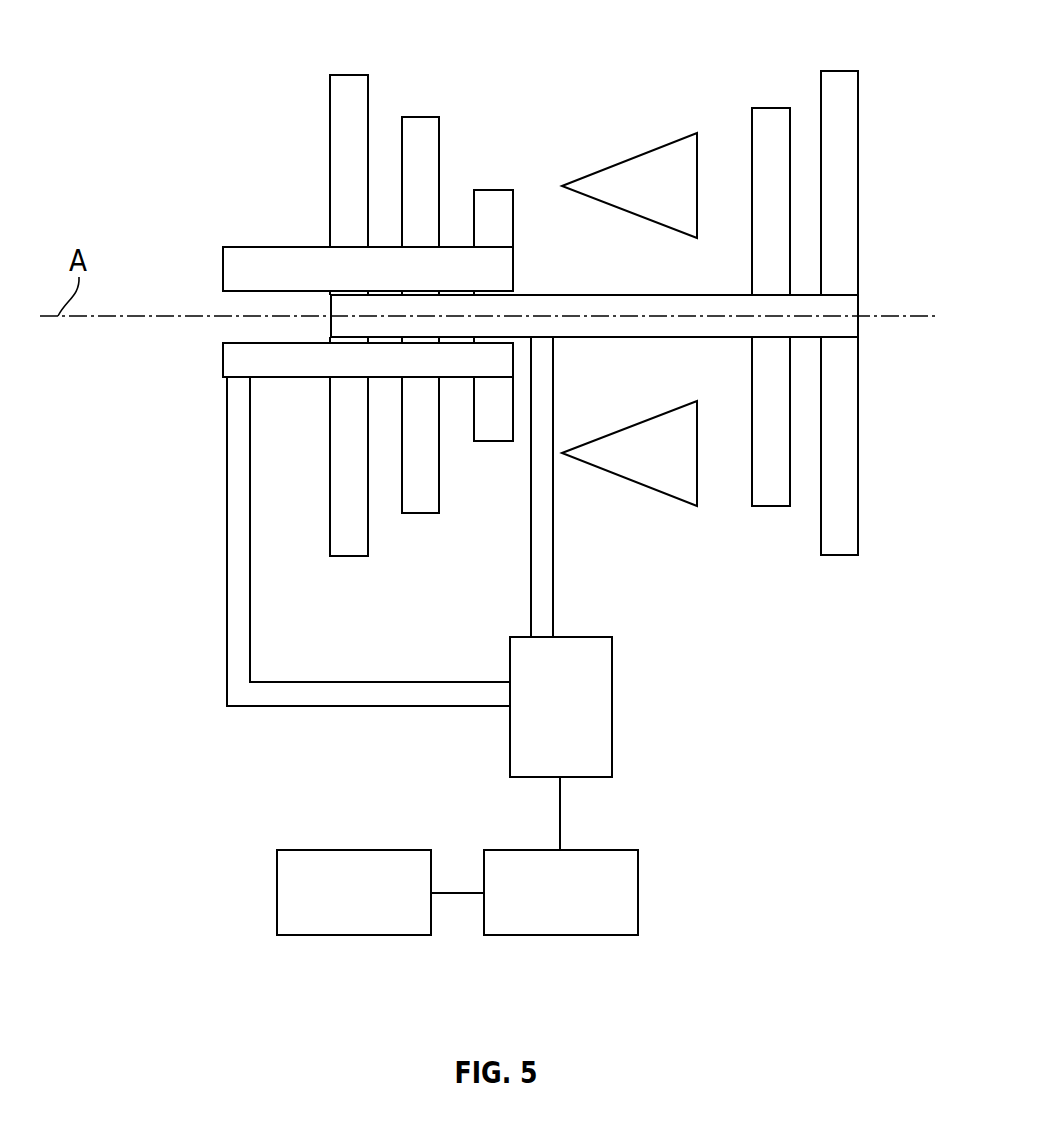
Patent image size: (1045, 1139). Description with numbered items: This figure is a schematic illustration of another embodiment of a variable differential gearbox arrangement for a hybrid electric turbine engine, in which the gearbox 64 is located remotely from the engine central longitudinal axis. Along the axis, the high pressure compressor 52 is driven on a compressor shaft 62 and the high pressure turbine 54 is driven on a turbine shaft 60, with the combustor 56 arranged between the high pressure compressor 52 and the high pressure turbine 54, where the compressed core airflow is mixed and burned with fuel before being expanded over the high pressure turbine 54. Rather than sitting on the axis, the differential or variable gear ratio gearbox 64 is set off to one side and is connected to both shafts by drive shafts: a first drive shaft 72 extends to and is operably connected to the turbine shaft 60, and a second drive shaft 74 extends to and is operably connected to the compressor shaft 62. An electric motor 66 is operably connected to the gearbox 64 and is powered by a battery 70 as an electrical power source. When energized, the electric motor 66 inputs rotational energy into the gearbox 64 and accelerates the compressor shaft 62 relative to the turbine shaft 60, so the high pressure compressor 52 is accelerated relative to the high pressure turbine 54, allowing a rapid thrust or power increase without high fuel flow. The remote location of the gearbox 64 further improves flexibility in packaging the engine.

The high pressure compressor 52 is at (451, 104).
The high pressure turbine 54 is at (771, 77).
The combustor 56 is at (640, 178).
The turbine shaft 60 is at (797, 293).
The compressor shaft 62 is at (273, 256).
The gearbox 64 is at (612, 723).
The electric motor 66 is at (568, 917).
The battery 70 is at (327, 917).
The first drive shaft 72 is at (553, 513).
The second drive shaft 74 is at (238, 593).